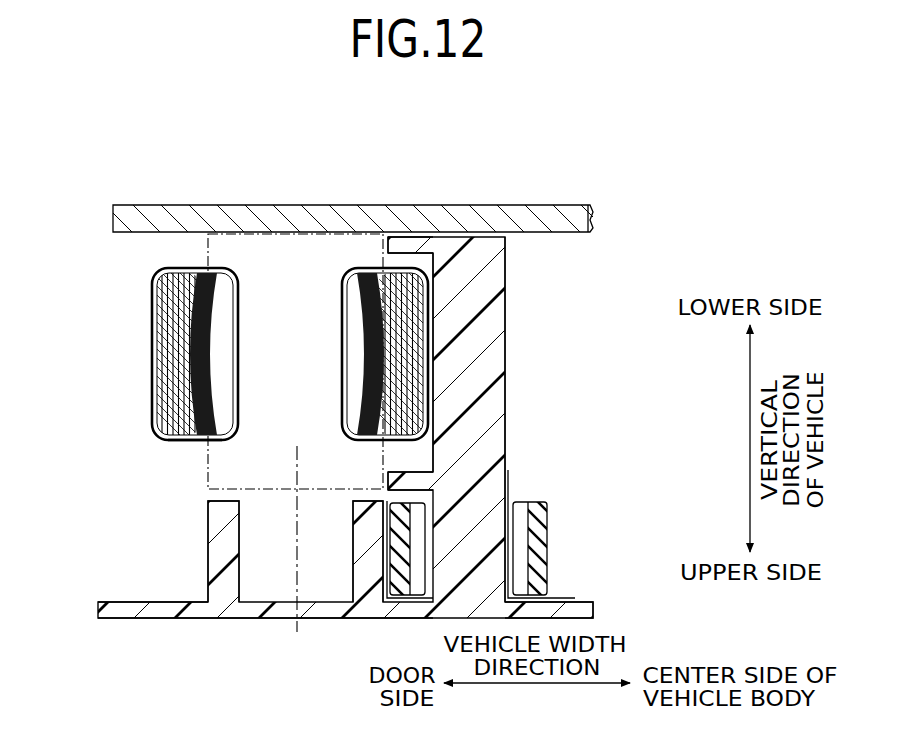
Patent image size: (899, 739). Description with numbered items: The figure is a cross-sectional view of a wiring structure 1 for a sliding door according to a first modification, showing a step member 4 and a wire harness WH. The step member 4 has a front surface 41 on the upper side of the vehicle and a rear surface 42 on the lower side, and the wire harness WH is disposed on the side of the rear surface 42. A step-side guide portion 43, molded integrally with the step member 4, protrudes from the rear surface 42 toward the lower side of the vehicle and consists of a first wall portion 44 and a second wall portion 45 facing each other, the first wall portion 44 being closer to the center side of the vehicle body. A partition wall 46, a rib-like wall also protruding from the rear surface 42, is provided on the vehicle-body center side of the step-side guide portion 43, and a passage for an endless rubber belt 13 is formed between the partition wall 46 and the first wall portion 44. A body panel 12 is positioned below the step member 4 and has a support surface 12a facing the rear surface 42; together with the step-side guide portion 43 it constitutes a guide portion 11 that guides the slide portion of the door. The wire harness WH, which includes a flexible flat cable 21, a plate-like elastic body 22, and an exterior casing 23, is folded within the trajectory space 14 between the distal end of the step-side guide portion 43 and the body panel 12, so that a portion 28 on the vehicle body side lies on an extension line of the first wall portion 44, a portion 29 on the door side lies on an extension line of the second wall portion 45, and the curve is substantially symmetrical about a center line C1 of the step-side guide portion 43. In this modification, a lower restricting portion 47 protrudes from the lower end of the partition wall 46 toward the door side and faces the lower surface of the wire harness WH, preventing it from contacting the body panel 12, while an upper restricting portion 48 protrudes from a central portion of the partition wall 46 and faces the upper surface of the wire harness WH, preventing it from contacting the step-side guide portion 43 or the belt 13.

The wiring structure for a sliding door 1 is at (199, 177).
The step member 4 is at (567, 553).
The guide portion 11 is at (290, 142).
The body panel 12 is at (444, 196).
The support surface 12a is at (532, 232).
The belt 13 is at (548, 500).
The trajectory space 14 is at (236, 226).
The flexible flat cable 21 is at (178, 266).
The plate-like elastic body 22 is at (203, 266).
The exterior casing 23 is at (163, 268).
The portion of the folded wire harness on the vehicle body side 28 is at (397, 447).
The portion of the folded wire harness on the door side 29 is at (188, 446).
The front surface 41 is at (160, 619).
The rear surface 42 is at (566, 601).
The step-side guide portion 43 is at (348, 658).
The first wall portion 44 is at (350, 588).
The second wall portion 45 is at (242, 588).
The partition wall 46 is at (507, 322).
The lower restricting portion 47 is at (408, 252).
The upper restricting portion 48 is at (400, 472).
The wire harness WH is at (150, 291).
The center line C1 is at (296, 526).